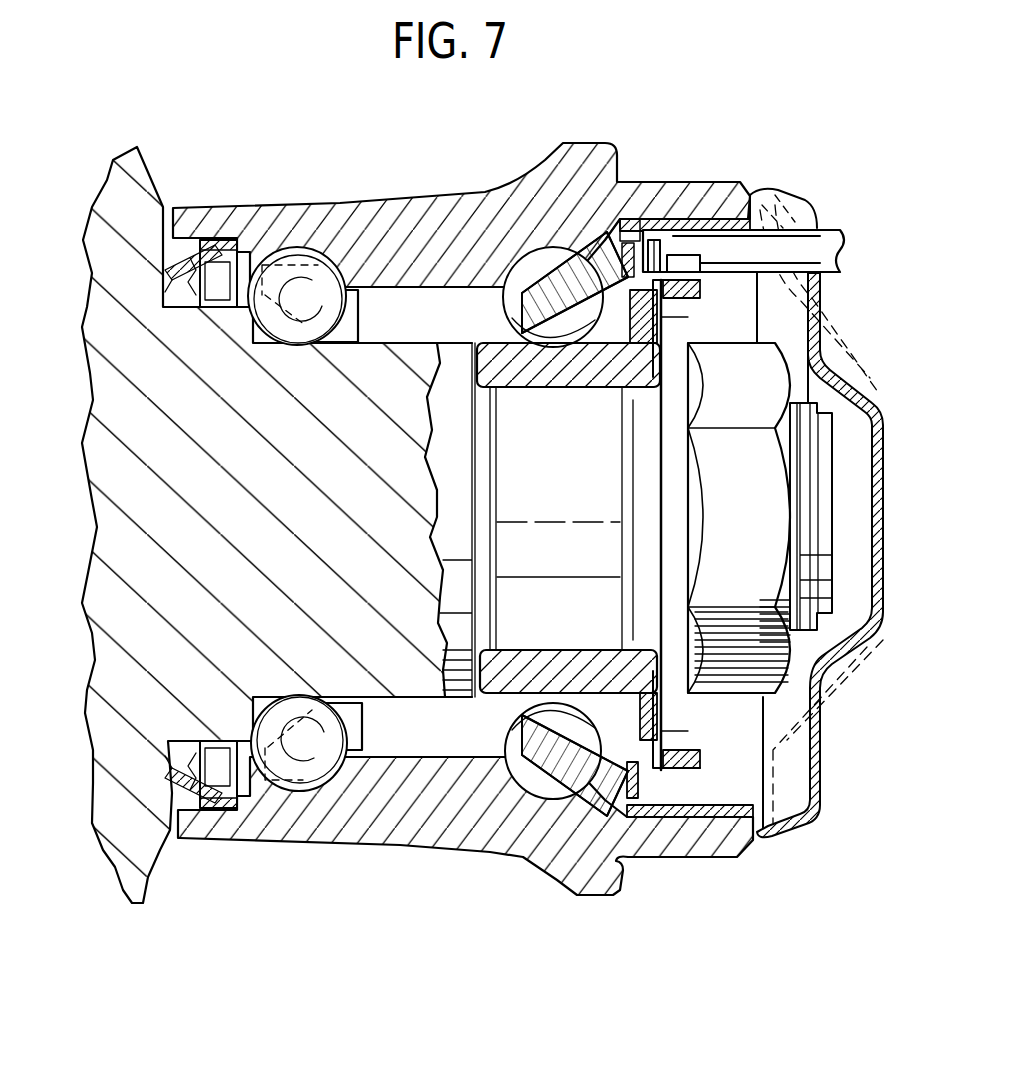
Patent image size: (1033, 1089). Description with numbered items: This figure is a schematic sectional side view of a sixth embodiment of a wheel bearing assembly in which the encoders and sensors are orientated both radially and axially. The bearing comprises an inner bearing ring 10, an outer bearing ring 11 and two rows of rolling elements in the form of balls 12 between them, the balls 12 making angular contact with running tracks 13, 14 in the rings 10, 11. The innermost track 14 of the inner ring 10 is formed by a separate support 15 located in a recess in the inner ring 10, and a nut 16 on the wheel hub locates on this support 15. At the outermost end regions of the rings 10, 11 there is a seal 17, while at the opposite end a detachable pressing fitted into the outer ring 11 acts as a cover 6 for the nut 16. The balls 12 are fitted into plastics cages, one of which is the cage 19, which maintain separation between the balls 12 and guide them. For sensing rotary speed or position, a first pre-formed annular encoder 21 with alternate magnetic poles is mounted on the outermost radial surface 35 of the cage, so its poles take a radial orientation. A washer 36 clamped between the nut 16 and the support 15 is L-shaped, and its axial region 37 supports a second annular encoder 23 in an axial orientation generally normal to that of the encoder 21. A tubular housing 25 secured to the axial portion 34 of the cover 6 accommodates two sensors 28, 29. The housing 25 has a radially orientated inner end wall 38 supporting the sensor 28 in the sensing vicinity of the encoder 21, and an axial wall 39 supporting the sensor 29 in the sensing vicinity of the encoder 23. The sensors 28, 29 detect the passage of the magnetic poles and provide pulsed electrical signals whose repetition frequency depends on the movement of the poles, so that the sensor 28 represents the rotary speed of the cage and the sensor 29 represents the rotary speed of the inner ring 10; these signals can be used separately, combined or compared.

The cover 6 is at (860, 390).
The inner bearing ring 10 is at (117, 277).
The outer bearing ring 11 is at (390, 208).
The balls 12 is at (313, 263).
The running track 13 is at (300, 252).
The running track 14 is at (273, 700).
The support 15 is at (483, 700).
The nut 16 is at (760, 367).
The seal 17 is at (203, 247).
The cage 19 is at (565, 745).
The first annular encoder 21 is at (590, 262).
The second annular encoder 23 is at (700, 282).
The housing 25 is at (783, 222).
The sensor 28 is at (667, 247).
The sensor 29 is at (690, 253).
The axial portion 34 is at (680, 815).
The radial surface 35 is at (640, 780).
The washer 36 is at (690, 712).
The axial region 37 is at (705, 749).
The inner end wall 38 is at (603, 235).
The axial wall 39 is at (836, 230).